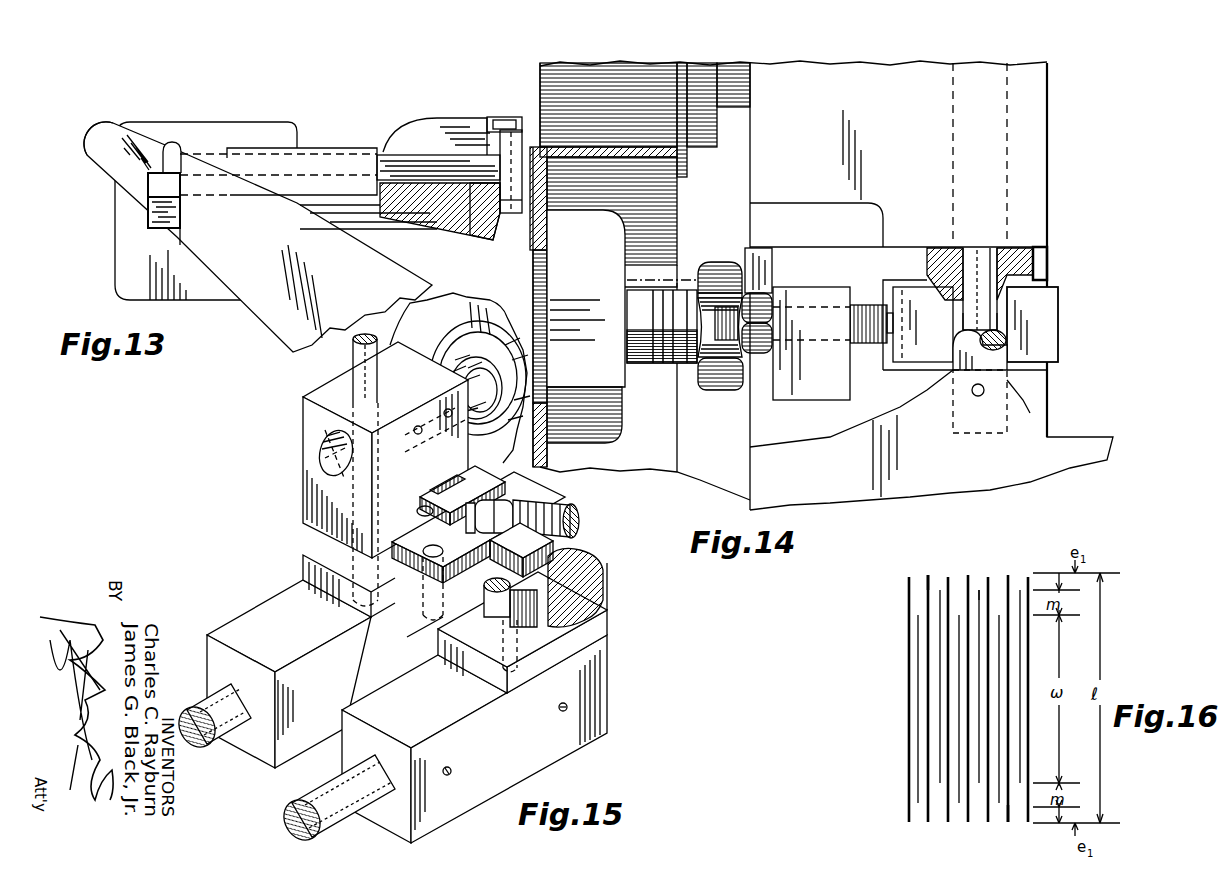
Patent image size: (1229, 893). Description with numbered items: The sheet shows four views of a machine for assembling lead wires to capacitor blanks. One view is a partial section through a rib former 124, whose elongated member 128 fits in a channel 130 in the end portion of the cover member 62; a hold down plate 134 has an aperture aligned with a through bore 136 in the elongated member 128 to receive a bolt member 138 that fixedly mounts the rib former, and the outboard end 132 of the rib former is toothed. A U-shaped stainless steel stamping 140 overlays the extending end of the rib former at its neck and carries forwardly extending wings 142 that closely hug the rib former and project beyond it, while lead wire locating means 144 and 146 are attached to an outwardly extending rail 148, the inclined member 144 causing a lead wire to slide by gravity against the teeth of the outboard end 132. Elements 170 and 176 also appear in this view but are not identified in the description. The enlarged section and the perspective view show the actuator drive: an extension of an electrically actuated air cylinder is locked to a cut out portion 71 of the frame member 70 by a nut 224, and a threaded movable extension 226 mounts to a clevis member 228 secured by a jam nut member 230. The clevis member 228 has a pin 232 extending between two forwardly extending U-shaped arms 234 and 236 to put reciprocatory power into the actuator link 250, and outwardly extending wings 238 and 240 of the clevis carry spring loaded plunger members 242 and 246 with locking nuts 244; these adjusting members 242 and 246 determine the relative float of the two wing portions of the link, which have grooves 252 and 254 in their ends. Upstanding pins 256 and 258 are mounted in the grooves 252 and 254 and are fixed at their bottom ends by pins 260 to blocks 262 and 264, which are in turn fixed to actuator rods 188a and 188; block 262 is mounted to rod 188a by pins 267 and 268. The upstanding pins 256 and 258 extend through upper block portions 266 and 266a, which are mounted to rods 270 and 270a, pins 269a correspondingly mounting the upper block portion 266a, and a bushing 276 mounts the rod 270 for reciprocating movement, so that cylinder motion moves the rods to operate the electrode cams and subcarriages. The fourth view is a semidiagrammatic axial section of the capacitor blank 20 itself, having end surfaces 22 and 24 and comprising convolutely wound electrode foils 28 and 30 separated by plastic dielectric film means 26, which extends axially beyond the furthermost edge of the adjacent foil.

In FIG. 13, the rib former 124 is at (425, 160).
In FIG. 13, the elongated member 128 is at (410, 160).
In FIG. 13, the channel 130 is at (470, 205).
In FIG. 13, the outboard end 132 is at (188, 160).
In FIG. 13, the hold down plate 134 is at (460, 128).
In FIG. 13, the through bore 136 is at (500, 138).
In FIG. 13, the bolt member 138 is at (512, 125).
In FIG. 13, the U-shaped stainless steel stamping 140 is at (301, 160).
In FIG. 13, the forwardly extending wings 142 is at (150, 183).
In FIG. 13, the lead wire locating means 144 is at (95, 135).
In FIG. 13, the lead wire locating means 146 is at (125, 268).
In FIG. 13, the outwardly extending rail 148 is at (150, 215).
In FIG. 13, the arm 170 is at (265, 300).
In FIG. 13, the knob 176 is at (168, 145).
In FIG. 13, the cover member 62 is at (490, 212).
In FIG. 14, the frame member 70 is at (547, 472).
In FIG. 14, the cut out portion 71 is at (615, 462).
In FIG. 15, the actuator rod 188 is at (323, 801).
In FIG. 15, the actuator rod 188a is at (213, 697).
In FIG. 14, the nut 224 is at (607, 370).
In FIG. 15, the threaded movable extension 226 is at (572, 522).
In FIG. 14, the threaded movable extension 226 is at (642, 365).
In FIG. 15, the clevis member 228 is at (480, 510).
In FIG. 15, the jam nut member 230 is at (494, 516).
In FIG. 14, the jam nut member 230 is at (725, 390).
In FIG. 15, the pin 232 is at (428, 552).
In FIG. 14, the pin 232 is at (977, 270).
In FIG. 15, the U-shaped arm 234 is at (410, 560).
In FIG. 14, the U-shaped arm 234 is at (1013, 267).
In FIG. 15, the U-shaped arm 236 is at (430, 622).
In FIG. 14, the U-shaped arm 236 is at (1020, 381).
In FIG. 15, the wing 238 is at (448, 500).
In FIG. 14, the wing 238 is at (803, 392).
In FIG. 15, the wing 240 is at (545, 565).
In FIG. 15, the spring loaded plunger member 242 is at (423, 508).
In FIG. 14, the spring loaded plunger member 242 is at (722, 305).
In FIG. 14, the locking nuts 244 is at (762, 305).
In FIG. 15, the spring loaded plunger member 246 is at (521, 540).
In FIG. 15, the actuator link 250 is at (472, 625).
In FIG. 14, the actuator link 250 is at (1043, 323).
In FIG. 15, the groove 252 is at (553, 638).
In FIG. 14, the groove 254 is at (990, 320).
In FIG. 15, the upstanding pin 256 is at (513, 610).
In FIG. 14, the upstanding pin 256 is at (990, 232).
In FIG. 15, the upstanding pin 258 is at (353, 372).
In FIG. 14, the upstanding pin 258 is at (968, 350).
In FIG. 14, the pins 260 is at (978, 397).
In FIG. 15, the block 262 is at (577, 659).
In FIG. 15, the block 264 is at (258, 613).
In FIG. 14, the upper block portion 266 is at (1030, 125).
In FIG. 15, the upper block portion 266a is at (320, 485).
In FIG. 15, the pin 267 is at (445, 776).
In FIG. 15, the pin 268 is at (560, 711).
In FIG. 15, the screw holes 269a is at (437, 440).
In FIG. 14, the rod 270 is at (738, 93).
In FIG. 15, the rod 270a is at (332, 459).
In FIG. 14, the bushing 276 is at (650, 115).
In FIG. 16, the capacitor blank 20 is at (896, 673).
In FIG. 16, the end surface 22 is at (944, 562).
In FIG. 16, the end surface 24 is at (1003, 830).
In FIG. 16, the plastic dielectric film means 26 is at (925, 583).
In FIG. 16, the electrode foil 28 is at (1000, 815).
In FIG. 16, the electrode foil 30 is at (978, 588).